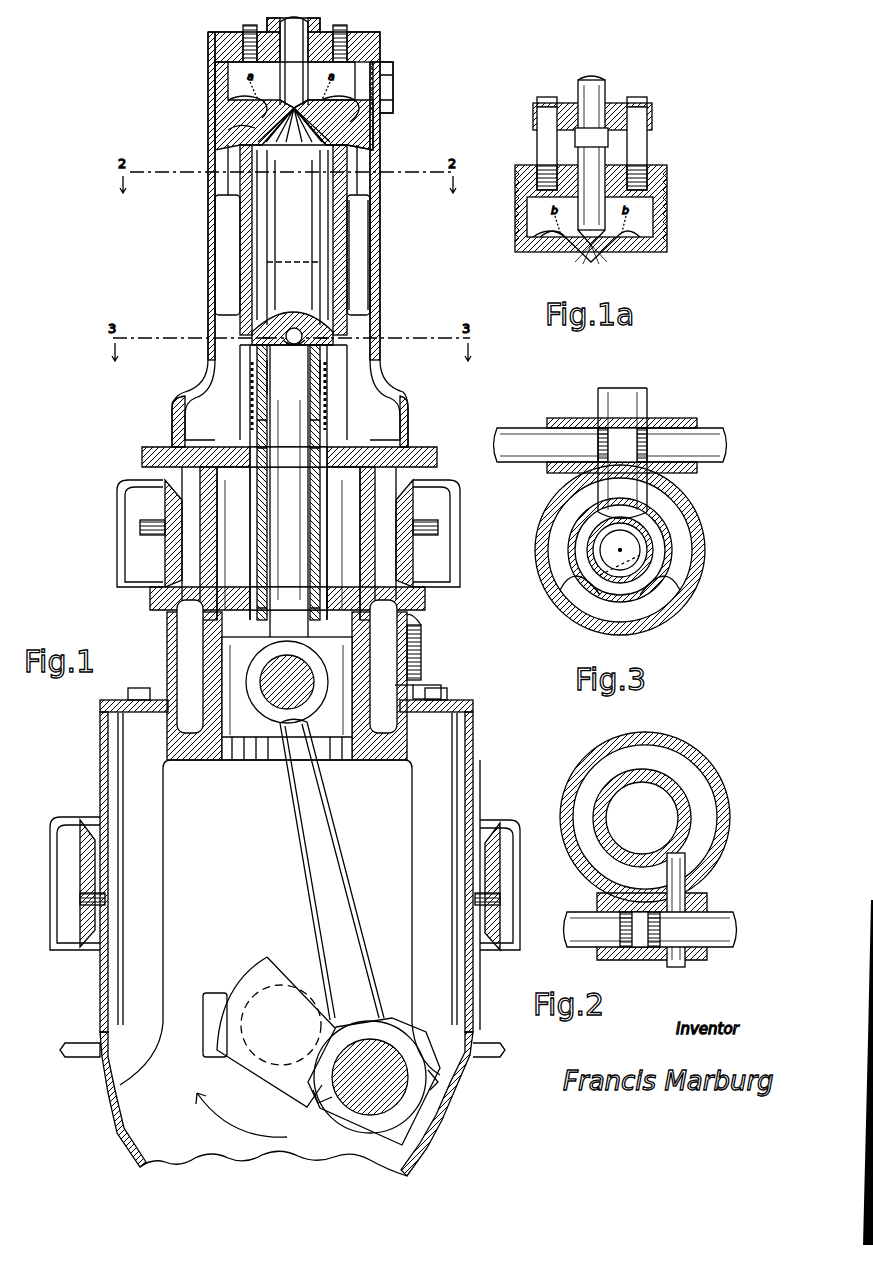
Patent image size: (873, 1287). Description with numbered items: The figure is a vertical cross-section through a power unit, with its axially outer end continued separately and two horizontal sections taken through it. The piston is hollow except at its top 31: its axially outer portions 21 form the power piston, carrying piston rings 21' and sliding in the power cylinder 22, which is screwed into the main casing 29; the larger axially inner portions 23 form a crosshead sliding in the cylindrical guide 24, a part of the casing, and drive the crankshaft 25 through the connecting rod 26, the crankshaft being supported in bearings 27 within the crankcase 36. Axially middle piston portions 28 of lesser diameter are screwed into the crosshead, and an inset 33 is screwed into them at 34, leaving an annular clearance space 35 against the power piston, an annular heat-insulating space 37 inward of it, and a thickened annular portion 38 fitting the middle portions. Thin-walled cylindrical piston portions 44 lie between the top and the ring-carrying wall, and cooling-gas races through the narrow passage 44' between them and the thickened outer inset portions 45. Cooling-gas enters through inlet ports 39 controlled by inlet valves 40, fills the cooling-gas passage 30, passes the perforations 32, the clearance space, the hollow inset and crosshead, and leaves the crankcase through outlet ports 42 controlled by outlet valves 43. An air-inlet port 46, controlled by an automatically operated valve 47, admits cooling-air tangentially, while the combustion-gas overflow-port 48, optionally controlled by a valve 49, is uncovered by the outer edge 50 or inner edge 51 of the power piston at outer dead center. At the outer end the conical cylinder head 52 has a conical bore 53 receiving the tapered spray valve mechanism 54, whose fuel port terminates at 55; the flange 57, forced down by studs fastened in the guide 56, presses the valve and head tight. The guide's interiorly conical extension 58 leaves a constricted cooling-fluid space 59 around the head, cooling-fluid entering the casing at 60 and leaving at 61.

In FIG. 1, the axially outer piston portions 21 is at (342, 392).
In FIG. 1, the piston rings 21' is at (341, 392).
In FIG. 1, the power cylinder 22 is at (342, 252).
In FIG. 3, the power cylinder 22 is at (580, 610).
In FIG. 2, the power cylinder 22 is at (603, 800).
In FIG. 1, the axially inner piston portions (crosshead) 23 is at (222, 656).
In FIG. 1, the cylindrical guide 24 is at (412, 690).
In FIG. 1, the crankshaft 25 is at (285, 1000).
In FIG. 1, the connecting rod 26 is at (328, 850).
In FIG. 1, the bearings 27 is at (215, 1010).
In FIG. 1, the axially middle piston portions 28 is at (345, 490).
In FIG. 1, the main casing 29 is at (372, 208).
In FIG. 3, the main casing 29 is at (700, 535).
In FIG. 2, the main casing 29 is at (715, 785).
In FIG. 1, the cooling-gas passage 30 is at (340, 525).
In FIG. 1, the piston top 31 is at (292, 318).
In FIG. 1, the perforations 32 is at (310, 430).
In FIG. 1, the inset 33 is at (312, 576).
In FIG. 1, the threaded connection of inset 34 is at (267, 604).
In FIG. 1, the annular clearance space 35 is at (268, 388).
In FIG. 1, the crankcase 36 is at (120, 1136).
In FIG. 1, the annular heat-insulating space 37 is at (262, 550).
In FIG. 1, the thickened annular portion of inset 38 is at (310, 455).
In FIG. 1, the cooling-gas inlet ports 39 is at (152, 497).
In FIG. 1, the inlet valves 40 is at (165, 560).
In FIG. 1, the cooling-gas outlet ports 42 is at (80, 845).
In FIG. 1, the outlet valves 43 is at (85, 905).
In FIG. 1, the thin-walled cylindrical piston portions 44 is at (290, 331).
In FIG. 3, the thin-walled cylindrical piston portions 44 is at (668, 550).
In FIG. 3, the narrow passage 44' is at (665, 587).
In FIG. 1, the thickened axially outer portions of inset 45 is at (262, 346).
In FIG. 3, the thickened axially outer portions of inset 45 is at (590, 548).
In FIG. 2, the air-inlet port 46 is at (685, 880).
In FIG. 2, the automatically operated valve 47 is at (718, 945).
In FIG. 1, the combustion-gas overflow-port 48 is at (368, 302).
In FIG. 3, the combustion-gas overflow-port 48 is at (628, 392).
In FIG. 3, the valve 49 is at (700, 430).
In FIG. 1, the outer edge of power piston (dotted line) 50 is at (302, 162).
In FIG. 1, the inner edge of power piston (dotted line) 51 is at (296, 262).
In FIG. 1, the cylinder head 52 is at (235, 120).
In FIG. 1, the conical bore 53 is at (352, 135).
In FIG. 1A, the conical bore 53 is at (605, 252).
In FIG. 1, the spray valve mechanism 54 is at (290, 50).
In FIG. 1A, the spray valve mechanism 54 is at (596, 170).
In FIG. 1A, the fuel-inlet port termination 55 is at (575, 258).
In FIG. 1, the guide 56 is at (372, 50).
In FIG. 1A, the guide 56 is at (518, 180).
In FIG. 1A, the flange 57 is at (533, 118).
In FIG. 1, the interiorly conical extension 58 is at (232, 105).
In FIG. 1, the constricted annular cooling-fluid space 59 is at (250, 130).
In FIG. 1, the cooling-fluid inlet 60 is at (421, 640).
In FIG. 1, the cooling-fluid outlet 61 is at (393, 88).